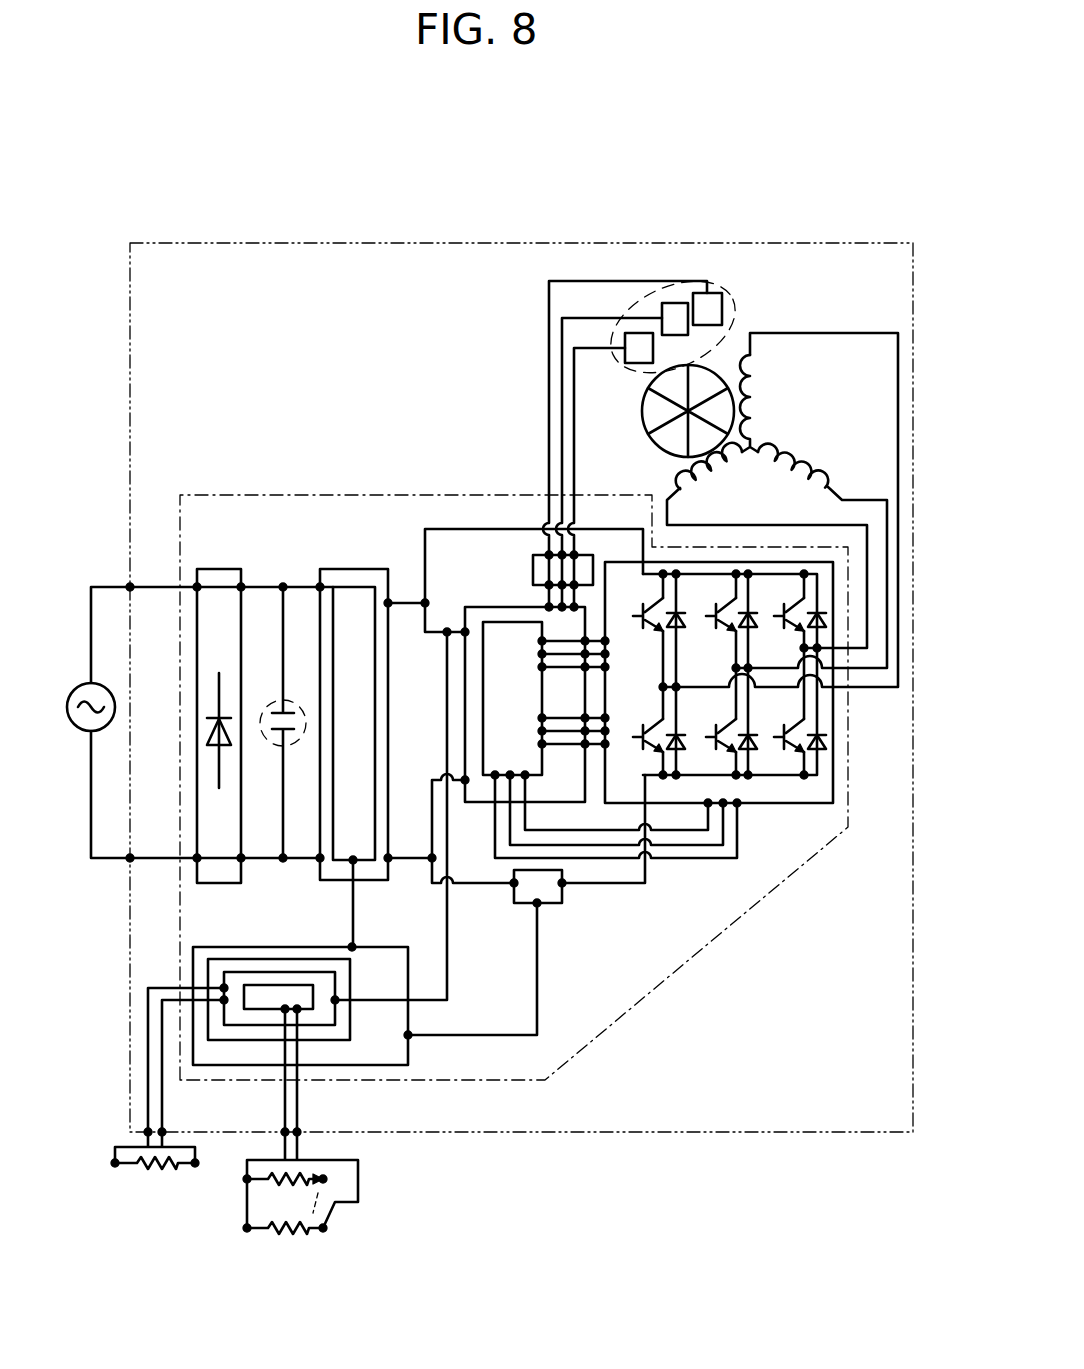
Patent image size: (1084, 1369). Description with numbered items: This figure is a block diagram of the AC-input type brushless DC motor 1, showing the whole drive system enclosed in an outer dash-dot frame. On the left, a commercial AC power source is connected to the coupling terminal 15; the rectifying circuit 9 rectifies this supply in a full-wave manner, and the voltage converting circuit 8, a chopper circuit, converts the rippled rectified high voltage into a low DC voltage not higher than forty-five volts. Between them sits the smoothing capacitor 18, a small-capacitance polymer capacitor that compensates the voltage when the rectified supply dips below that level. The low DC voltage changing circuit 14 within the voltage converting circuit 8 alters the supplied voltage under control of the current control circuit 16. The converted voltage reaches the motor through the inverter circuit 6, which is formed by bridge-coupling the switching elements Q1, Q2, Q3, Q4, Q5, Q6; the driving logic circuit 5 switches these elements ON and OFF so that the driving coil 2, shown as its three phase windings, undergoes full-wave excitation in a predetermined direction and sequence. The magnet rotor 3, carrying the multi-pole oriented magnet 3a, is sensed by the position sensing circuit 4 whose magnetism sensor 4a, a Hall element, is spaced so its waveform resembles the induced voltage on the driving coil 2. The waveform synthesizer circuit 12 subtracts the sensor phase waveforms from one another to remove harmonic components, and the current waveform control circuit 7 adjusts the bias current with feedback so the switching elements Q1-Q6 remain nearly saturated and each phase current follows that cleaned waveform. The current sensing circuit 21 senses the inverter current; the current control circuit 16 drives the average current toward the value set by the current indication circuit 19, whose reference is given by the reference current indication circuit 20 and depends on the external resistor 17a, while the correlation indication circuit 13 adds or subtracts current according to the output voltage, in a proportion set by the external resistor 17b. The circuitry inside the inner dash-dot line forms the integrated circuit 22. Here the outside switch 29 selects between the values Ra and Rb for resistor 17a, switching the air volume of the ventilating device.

The AC-input type brushless DC motor 1 is at (330, 243).
The driving coil 2 is at (740, 468).
The magnet rotor 3 is at (658, 431).
The multi-pole oriented magnet 3a is at (643, 425).
The position sensing circuit 4 is at (714, 325).
The magnetism sensor 4a is at (732, 287).
The driving logic circuit 5 is at (603, 785).
The inverter circuit 6 is at (740, 722).
The current waveform control circuit 7 is at (532, 760).
The voltage converting circuit 8 is at (355, 695).
The rectifying circuit 9 is at (213, 568).
The waveform synthesizer circuit 12 is at (540, 555).
The correlation indication circuit 13 is at (230, 1025).
The low DC voltage changing circuit 14 is at (365, 587).
The coupling terminal 15 is at (130, 585).
The current control circuit 16 is at (349, 1039).
The resistor 17a is at (295, 1164).
The resistor 17b is at (150, 1172).
The smoothing capacitor 18 is at (280, 700).
The current indication circuit 19 is at (350, 1030).
The reference current indication circuit 20 is at (273, 1010).
The current sensing circuit 21 is at (547, 904).
The integrated circuit 22 is at (218, 493).
The outside switch 29 is at (333, 1218).
The switching element Q1 is at (638, 607).
The switching element Q2 is at (643, 724).
The switching element Q3 is at (708, 607).
The switching element Q4 is at (717, 724).
The switching element Q5 is at (777, 607).
The switching element Q6 is at (781, 724).
The resistor value Ra is at (285, 1249).
The resistor value Rb is at (285, 1199).